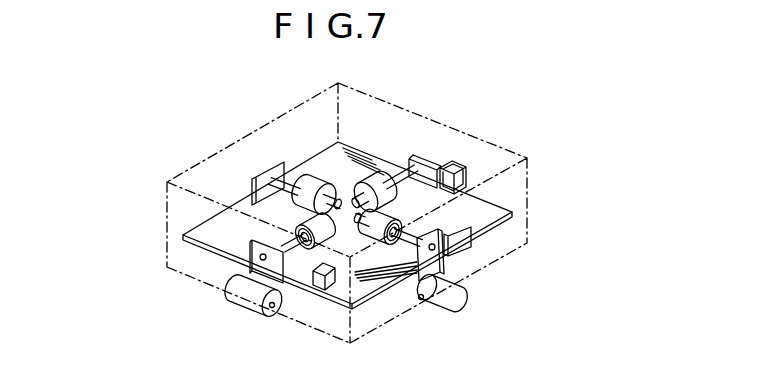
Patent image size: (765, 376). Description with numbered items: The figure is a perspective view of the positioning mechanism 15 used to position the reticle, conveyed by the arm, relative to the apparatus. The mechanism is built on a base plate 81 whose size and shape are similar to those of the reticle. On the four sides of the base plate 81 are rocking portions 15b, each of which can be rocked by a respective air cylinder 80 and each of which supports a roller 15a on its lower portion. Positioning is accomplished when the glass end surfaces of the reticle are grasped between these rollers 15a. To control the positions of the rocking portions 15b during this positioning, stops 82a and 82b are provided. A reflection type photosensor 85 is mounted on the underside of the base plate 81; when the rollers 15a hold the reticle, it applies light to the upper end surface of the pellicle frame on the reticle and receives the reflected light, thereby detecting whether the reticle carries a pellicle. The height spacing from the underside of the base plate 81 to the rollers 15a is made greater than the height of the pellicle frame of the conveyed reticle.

The positioning mechanism 15 is at (428, 121).
The rollers 15a is at (273, 310).
The rocking portions 15b is at (254, 186).
The air cylinders 80 is at (401, 199).
The base plate 81 is at (503, 212).
The stop 82a is at (452, 178).
The stop 82b is at (465, 248).
The reflection type photosensor 85 is at (333, 288).